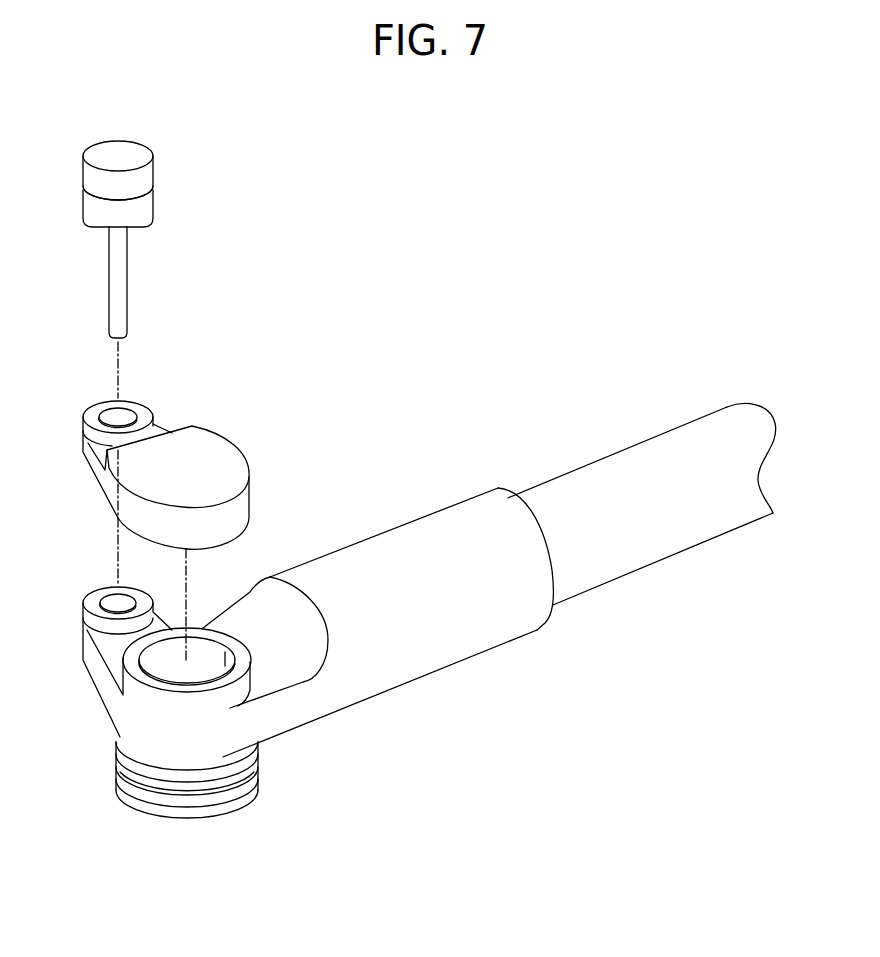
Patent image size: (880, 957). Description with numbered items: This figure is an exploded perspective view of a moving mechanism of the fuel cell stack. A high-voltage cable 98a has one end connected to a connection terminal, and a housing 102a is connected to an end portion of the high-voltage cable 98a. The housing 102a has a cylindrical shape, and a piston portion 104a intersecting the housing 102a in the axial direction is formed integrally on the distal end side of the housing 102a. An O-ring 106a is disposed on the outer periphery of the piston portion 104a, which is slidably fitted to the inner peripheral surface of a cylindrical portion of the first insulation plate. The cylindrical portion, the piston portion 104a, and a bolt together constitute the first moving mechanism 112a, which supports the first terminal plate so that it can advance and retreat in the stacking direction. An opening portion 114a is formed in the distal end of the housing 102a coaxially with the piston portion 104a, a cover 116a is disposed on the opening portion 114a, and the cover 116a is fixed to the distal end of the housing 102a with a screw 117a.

The high-voltage cable 98a is at (600, 477).
The housing 102a is at (453, 663).
The piston portion 104a is at (212, 763).
The O-ring 106a is at (240, 790).
The first moving mechanism 112a is at (167, 827).
The opening portion 114a is at (162, 672).
The cover 116a is at (215, 458).
The screw 117a is at (150, 172).